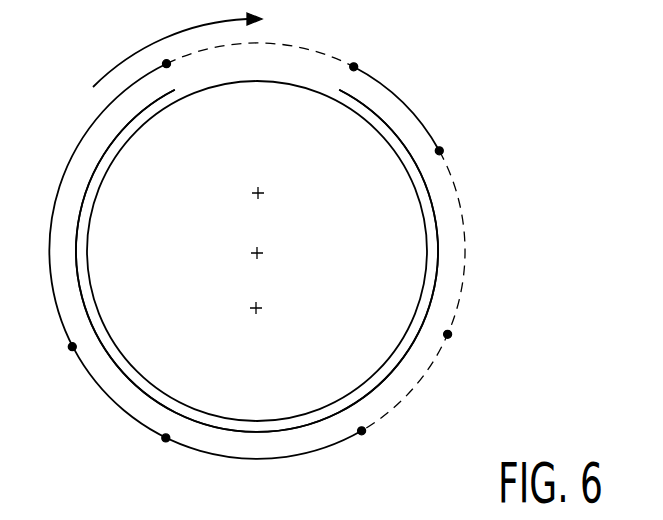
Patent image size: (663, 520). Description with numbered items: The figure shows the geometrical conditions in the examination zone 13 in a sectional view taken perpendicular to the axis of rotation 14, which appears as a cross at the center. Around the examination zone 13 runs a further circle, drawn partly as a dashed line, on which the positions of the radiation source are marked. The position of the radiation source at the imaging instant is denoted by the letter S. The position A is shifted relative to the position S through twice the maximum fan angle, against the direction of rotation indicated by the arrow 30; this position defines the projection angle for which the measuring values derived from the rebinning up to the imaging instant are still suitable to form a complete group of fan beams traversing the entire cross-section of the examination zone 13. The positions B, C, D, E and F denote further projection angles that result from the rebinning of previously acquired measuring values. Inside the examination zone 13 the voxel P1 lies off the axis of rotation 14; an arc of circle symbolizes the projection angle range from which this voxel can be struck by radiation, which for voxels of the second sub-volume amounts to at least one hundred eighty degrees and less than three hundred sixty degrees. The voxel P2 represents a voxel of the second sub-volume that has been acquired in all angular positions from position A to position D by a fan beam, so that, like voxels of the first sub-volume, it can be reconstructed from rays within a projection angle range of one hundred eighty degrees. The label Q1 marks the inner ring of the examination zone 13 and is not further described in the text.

The examination zone 13 is at (107, 172).
The axis of rotation 14 is at (263, 253).
The arrow 30 is at (170, 33).
The ring edge point Q1 is at (385, 122).
The voxel P1 is at (262, 192).
The voxel P2 is at (260, 307).
The position A is at (441, 151).
The position B is at (355, 65).
The position C is at (164, 62).
The position D is at (71, 347).
The position E is at (165, 439).
The position F is at (363, 432).
The position of the radiation source S is at (449, 334).